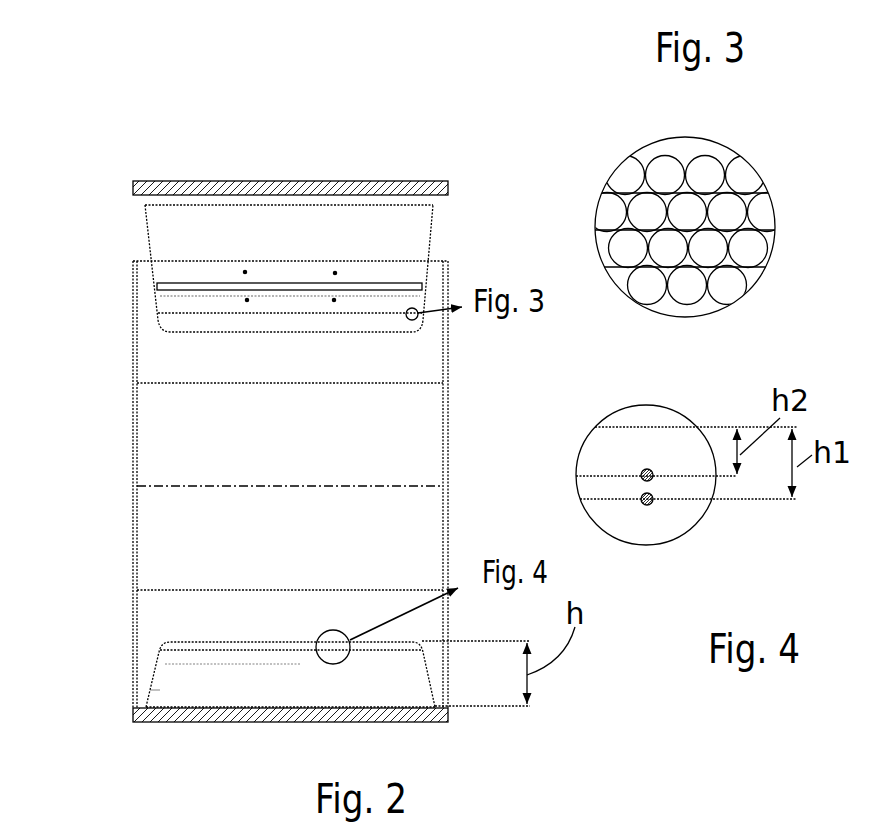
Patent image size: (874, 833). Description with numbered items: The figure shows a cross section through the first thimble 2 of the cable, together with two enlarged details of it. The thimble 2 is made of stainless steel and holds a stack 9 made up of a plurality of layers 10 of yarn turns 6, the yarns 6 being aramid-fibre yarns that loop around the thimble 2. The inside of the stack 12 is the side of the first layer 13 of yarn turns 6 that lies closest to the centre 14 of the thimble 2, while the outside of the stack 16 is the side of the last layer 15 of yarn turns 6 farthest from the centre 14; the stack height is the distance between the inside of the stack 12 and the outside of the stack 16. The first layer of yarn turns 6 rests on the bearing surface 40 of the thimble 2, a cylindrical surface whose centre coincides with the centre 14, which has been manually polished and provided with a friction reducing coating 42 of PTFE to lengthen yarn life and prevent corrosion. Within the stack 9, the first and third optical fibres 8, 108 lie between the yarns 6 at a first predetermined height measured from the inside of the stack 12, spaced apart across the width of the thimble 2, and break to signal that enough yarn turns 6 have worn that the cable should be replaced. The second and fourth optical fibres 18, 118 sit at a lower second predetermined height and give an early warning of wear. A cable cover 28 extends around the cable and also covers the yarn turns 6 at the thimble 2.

In FIG. 2, the first thimble 2 is at (89, 191).
In FIG. 2, the yarns 6 is at (459, 215).
In FIG. 3, the yarns 6 is at (743, 177).
In FIG. 2, the first optical fibre 8 is at (335, 273).
In FIG. 4, the first optical fibre 8 is at (650, 510).
In FIG. 2, the stack 9 is at (230, 664).
In FIG. 3, the layers 10 is at (768, 172).
In FIG. 2, the inside of the stack 12 is at (183, 624).
In FIG. 3, the first layer 13 is at (765, 284).
In FIG. 2, the centre 14 is at (241, 481).
In FIG. 2, the last layer 15 is at (158, 688).
In FIG. 2, the outside of the stack 16 is at (210, 700).
In FIG. 2, the second optical fibre 18 is at (334, 300).
In FIG. 4, the second optical fibre 18 is at (652, 480).
In FIG. 2, the cable cover 28 is at (265, 183).
In FIG. 2, the bearing surface 40 is at (240, 332).
In FIG. 2, the friction reducing coating 42 is at (206, 327).
In FIG. 2, the third optical fibre 108 is at (245, 272).
In FIG. 2, the fourth optical fibre 118 is at (247, 300).